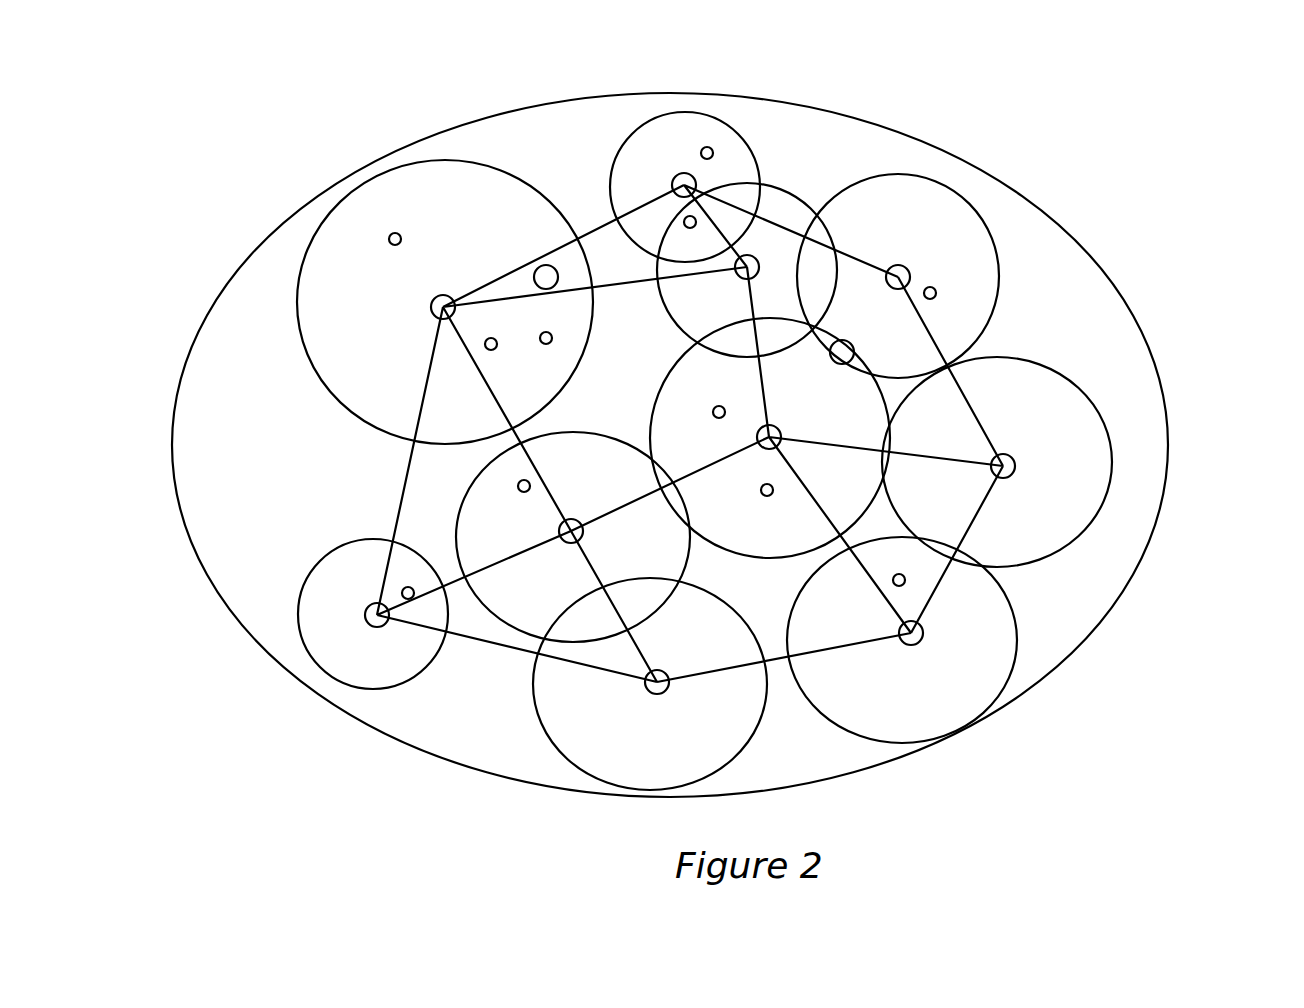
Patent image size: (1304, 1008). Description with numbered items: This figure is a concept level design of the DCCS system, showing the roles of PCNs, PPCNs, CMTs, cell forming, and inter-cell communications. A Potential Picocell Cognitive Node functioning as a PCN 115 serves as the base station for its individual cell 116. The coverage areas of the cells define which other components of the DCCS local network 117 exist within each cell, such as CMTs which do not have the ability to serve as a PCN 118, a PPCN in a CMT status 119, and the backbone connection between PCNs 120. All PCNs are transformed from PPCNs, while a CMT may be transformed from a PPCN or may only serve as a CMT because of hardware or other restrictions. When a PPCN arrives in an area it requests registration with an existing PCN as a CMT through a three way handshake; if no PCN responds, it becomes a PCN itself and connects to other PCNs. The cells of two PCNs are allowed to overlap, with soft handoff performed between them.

The PCN 115 is at (379, 613).
The cell 116 is at (1112, 433).
The DCCS local network 117 is at (1078, 240).
The CMT 118 is at (518, 486).
The PPCN in CMT status 119 is at (558, 277).
The backbone connection between PCNs 120 is at (587, 227).